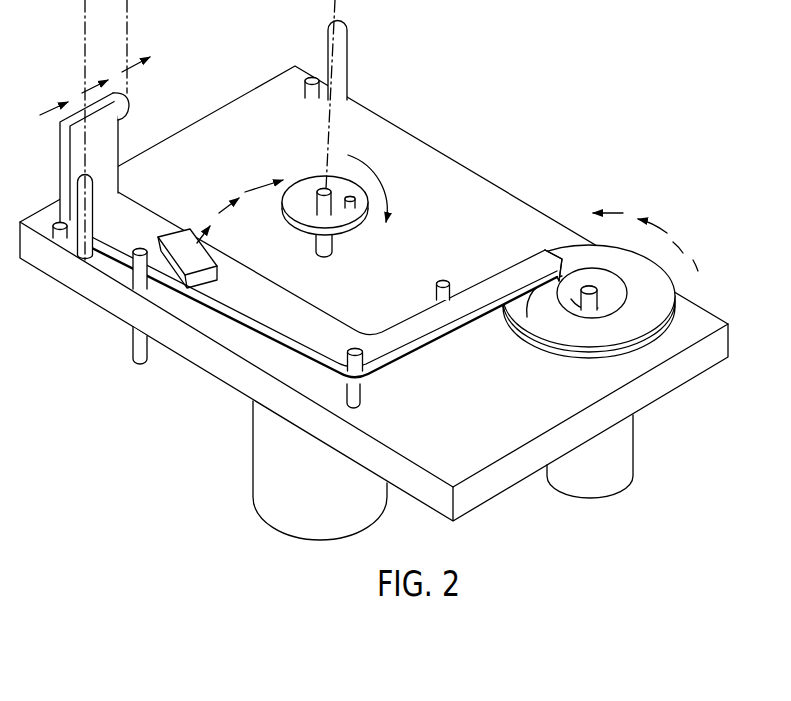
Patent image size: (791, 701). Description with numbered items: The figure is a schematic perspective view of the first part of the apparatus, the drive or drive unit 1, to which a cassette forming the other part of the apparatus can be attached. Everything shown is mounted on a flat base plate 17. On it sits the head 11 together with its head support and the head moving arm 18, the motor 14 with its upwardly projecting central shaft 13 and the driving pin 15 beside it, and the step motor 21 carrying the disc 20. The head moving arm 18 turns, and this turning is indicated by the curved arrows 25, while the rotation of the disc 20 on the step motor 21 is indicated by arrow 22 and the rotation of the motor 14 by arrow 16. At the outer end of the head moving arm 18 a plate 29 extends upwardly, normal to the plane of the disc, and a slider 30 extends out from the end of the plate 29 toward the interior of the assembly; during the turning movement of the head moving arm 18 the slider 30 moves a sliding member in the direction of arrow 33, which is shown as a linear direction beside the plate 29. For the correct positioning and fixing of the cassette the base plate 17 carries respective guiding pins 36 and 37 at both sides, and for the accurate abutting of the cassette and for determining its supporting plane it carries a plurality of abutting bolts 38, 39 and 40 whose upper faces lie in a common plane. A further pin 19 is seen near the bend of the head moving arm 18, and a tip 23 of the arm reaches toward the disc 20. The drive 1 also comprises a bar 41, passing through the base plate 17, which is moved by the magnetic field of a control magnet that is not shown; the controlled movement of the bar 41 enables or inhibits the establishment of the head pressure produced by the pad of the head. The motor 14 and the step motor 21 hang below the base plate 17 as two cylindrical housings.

The drive unit 1 is at (113, 340).
The head 11 is at (195, 278).
The central shaft 13 is at (323, 189).
The motor 14 is at (267, 492).
The driving pin 15 is at (363, 221).
The rotation direction arrow 16 is at (398, 193).
The base plate 17 is at (480, 494).
The head moving arm 18 is at (243, 313).
The pin 19 is at (362, 397).
The disc 20 is at (657, 290).
The step motor 21 is at (622, 465).
The rotation direction arrow 22 is at (660, 232).
The follower tip 23 is at (562, 280).
The movement direction arrow 25 is at (220, 210).
The plate 29 is at (63, 157).
The slider 30 is at (129, 102).
The arrow 33 is at (123, 68).
The guiding pin 36 is at (78, 252).
The guiding pin 37 is at (347, 64).
The abutting bolt 38 is at (58, 238).
The abutting bolt 39 is at (312, 78).
The abutting bolt 40 is at (446, 281).
The bar 41 is at (133, 351).